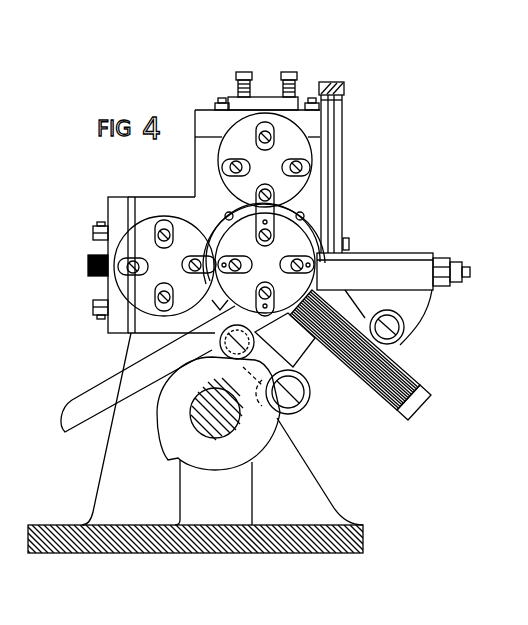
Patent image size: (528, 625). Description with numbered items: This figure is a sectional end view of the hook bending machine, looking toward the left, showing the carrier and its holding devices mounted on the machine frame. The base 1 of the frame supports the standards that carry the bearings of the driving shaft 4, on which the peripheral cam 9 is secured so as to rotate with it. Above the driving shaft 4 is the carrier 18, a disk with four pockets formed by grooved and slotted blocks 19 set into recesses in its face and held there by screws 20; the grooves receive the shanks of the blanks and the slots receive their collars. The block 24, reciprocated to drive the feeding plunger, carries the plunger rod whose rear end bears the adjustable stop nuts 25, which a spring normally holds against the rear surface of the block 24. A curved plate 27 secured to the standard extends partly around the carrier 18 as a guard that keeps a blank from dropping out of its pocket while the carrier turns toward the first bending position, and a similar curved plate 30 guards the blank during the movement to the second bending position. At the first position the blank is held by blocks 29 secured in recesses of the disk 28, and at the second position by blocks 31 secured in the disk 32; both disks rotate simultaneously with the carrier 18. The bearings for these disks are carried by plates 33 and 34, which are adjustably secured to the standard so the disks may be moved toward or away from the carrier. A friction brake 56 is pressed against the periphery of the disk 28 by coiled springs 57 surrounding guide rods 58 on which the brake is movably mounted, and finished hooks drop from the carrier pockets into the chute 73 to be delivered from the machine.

The base 1 is at (367, 535).
The driving shaft 4 is at (232, 416).
The peripheral cam 9 is at (282, 420).
The carrier 18 is at (298, 238).
The blocks 19 is at (269, 306).
The screws 20 is at (286, 265).
The block 24 is at (438, 284).
The adjustable stop nuts 25 is at (450, 266).
The curved plate 27 is at (312, 214).
The disk 28 is at (312, 138).
The blocks 29 is at (292, 166).
The curved plate 30 is at (225, 217).
The blocks 31 is at (182, 264).
The disk 32 is at (156, 296).
The plate 33 is at (207, 119).
The plate 34 is at (120, 192).
The friction brake 56 is at (294, 102).
The coiled springs 57 is at (234, 88).
The guide rods 58 is at (247, 75).
The chute 73 is at (93, 399).